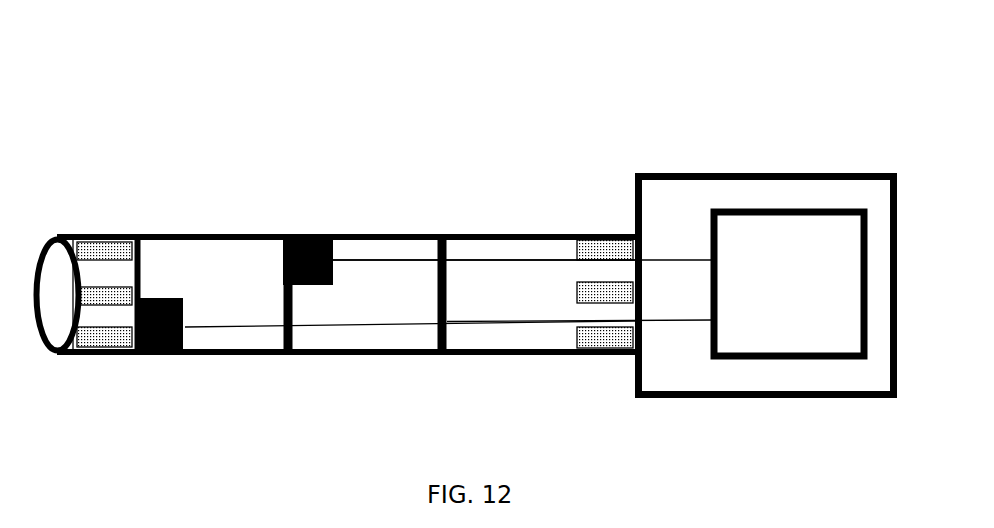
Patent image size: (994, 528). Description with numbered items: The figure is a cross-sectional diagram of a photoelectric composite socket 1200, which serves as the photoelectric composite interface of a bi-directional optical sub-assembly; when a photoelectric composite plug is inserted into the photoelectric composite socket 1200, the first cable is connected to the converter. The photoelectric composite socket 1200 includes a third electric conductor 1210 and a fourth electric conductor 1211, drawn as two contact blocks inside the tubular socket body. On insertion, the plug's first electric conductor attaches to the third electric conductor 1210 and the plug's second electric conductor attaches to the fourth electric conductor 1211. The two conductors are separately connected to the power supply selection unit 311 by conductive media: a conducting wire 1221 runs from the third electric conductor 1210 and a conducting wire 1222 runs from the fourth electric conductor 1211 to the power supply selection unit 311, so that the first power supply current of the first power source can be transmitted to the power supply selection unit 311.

The photoelectric composite socket 1200 is at (427, 78).
The third electric conductor 1210 is at (320, 237).
The fourth electric conductor 1211 is at (163, 355).
The conducting wire 1221 is at (480, 260).
The conducting wire 1222 is at (493, 322).
The power supply selection unit 311 is at (789, 284).